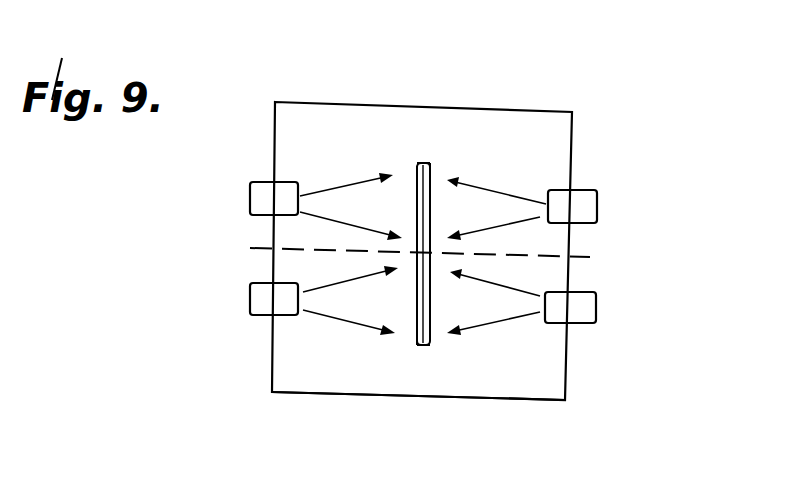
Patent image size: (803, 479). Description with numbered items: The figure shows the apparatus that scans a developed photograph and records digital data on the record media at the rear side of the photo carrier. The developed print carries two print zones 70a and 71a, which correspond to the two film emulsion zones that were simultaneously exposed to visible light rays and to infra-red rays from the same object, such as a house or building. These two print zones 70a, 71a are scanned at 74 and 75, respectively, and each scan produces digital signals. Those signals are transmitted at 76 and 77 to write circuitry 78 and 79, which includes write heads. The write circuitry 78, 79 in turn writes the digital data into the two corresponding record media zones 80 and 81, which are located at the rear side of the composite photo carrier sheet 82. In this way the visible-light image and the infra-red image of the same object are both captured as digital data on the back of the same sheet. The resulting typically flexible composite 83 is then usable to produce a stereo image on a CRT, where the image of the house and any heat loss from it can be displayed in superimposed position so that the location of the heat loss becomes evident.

The print zone 70a is at (416, 172).
The print zone 71a is at (414, 338).
The scanner 74 is at (250, 197).
The scanner 75 is at (250, 299).
The signal transmission path 76 is at (333, 103).
The signal transmission path 77 is at (356, 395).
The write circuitry 78 is at (586, 204).
The write circuitry 79 is at (585, 305).
The record media zone 80 is at (431, 168).
The record media zone 81 is at (430, 338).
The composite photo carrier sheet 82 is at (417, 226).
The flexible composite 83 is at (437, 153).